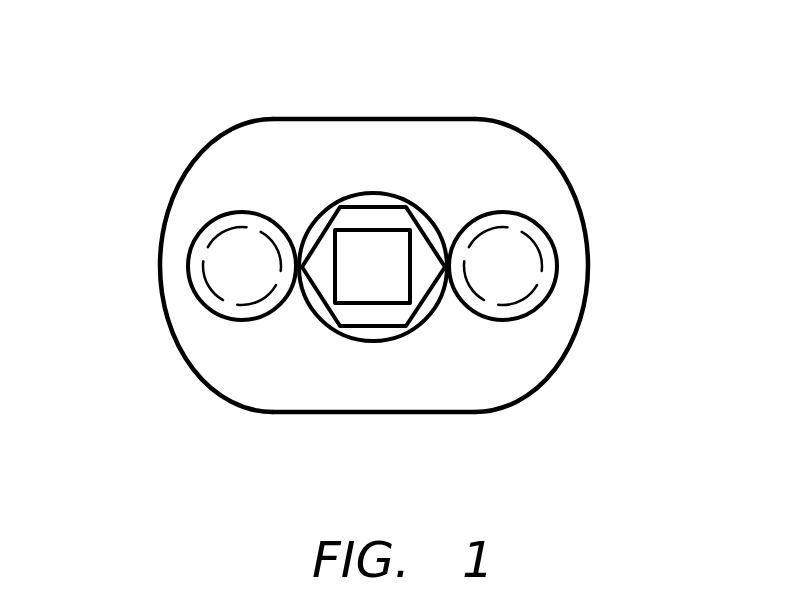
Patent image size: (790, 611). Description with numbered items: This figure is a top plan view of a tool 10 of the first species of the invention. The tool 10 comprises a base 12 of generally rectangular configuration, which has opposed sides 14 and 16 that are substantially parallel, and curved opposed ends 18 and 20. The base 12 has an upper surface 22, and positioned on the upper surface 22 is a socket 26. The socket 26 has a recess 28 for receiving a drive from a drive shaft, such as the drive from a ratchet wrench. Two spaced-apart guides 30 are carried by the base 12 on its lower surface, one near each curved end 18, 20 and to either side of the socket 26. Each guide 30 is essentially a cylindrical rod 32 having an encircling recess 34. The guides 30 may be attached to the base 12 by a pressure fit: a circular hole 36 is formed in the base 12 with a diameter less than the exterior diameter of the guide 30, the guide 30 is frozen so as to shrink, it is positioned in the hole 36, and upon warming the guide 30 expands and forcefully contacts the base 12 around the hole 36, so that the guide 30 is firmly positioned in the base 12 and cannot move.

The tool 10 is at (552, 150).
The base 12 is at (530, 178).
The side 14 is at (430, 118).
The side 16 is at (358, 414).
The curved end 18 is at (158, 264).
The curved end 20 is at (587, 267).
The upper surface 22 is at (453, 377).
The socket 26 is at (330, 200).
The recess 28 is at (352, 283).
The guide 30 is at (265, 282).
The cylindrical rod 32 is at (237, 211).
The encircling recess 34 is at (212, 292).
The circular hole 36 is at (250, 322).